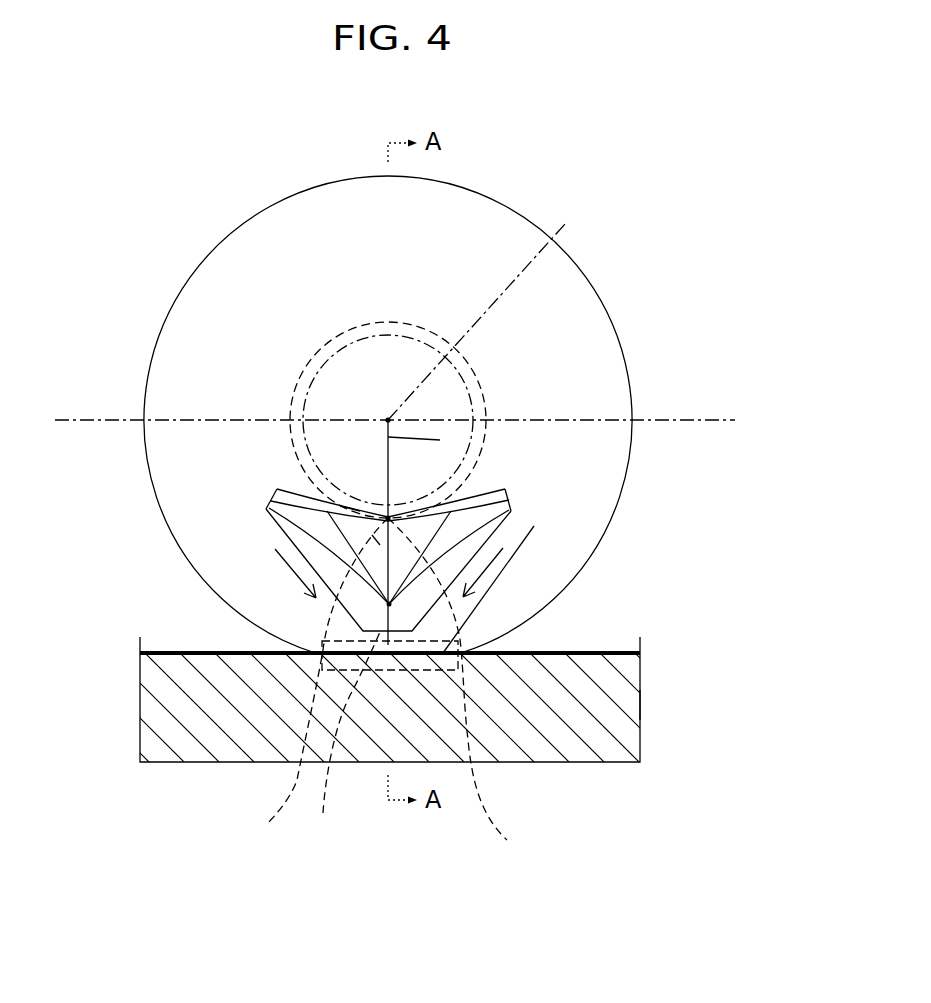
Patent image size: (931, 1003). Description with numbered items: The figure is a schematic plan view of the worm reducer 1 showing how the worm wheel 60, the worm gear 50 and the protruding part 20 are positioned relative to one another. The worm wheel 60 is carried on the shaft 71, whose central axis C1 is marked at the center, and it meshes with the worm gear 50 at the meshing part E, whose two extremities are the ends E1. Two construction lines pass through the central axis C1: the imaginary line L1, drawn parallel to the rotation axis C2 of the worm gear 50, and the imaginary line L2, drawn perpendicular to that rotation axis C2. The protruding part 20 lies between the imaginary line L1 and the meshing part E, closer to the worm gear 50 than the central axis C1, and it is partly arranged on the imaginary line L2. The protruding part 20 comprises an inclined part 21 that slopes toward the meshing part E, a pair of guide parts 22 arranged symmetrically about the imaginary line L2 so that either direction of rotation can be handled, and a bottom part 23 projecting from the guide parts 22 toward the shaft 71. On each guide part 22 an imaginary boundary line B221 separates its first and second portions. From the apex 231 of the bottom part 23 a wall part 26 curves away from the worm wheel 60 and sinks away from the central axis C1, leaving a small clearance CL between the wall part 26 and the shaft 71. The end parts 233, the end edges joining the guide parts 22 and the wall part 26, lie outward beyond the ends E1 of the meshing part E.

The worm reducer 1 is at (198, 153).
The protruding part 20 is at (389, 563).
The inclined part 21 is at (488, 589).
The guide part 22 is at (270, 503).
The bottom part 23 is at (372, 538).
The wall part 26 is at (350, 497).
The worm gear 50 is at (585, 653).
The worm wheel 60 is at (473, 368).
The shaft 71 is at (402, 322).
The apex of the bottom part 231 is at (345, 608).
The end part 233 is at (277, 489).
The imaginary boundary line B221 is at (372, 535).
The central axis of the shaft C1 is at (483, 309).
The rotation axis of the worm gear C2 is at (642, 706).
The clearance CL is at (470, 640).
The meshing part E is at (346, 735).
The ends of the meshing part E1 is at (390, 686).
The imaginary line L1 is at (70, 422).
The imaginary line L2 is at (440, 440).